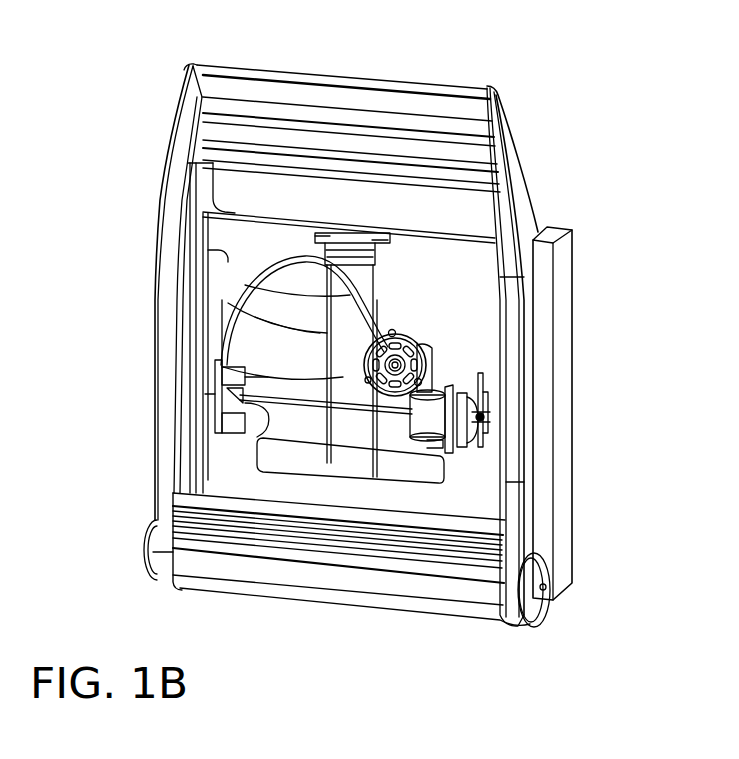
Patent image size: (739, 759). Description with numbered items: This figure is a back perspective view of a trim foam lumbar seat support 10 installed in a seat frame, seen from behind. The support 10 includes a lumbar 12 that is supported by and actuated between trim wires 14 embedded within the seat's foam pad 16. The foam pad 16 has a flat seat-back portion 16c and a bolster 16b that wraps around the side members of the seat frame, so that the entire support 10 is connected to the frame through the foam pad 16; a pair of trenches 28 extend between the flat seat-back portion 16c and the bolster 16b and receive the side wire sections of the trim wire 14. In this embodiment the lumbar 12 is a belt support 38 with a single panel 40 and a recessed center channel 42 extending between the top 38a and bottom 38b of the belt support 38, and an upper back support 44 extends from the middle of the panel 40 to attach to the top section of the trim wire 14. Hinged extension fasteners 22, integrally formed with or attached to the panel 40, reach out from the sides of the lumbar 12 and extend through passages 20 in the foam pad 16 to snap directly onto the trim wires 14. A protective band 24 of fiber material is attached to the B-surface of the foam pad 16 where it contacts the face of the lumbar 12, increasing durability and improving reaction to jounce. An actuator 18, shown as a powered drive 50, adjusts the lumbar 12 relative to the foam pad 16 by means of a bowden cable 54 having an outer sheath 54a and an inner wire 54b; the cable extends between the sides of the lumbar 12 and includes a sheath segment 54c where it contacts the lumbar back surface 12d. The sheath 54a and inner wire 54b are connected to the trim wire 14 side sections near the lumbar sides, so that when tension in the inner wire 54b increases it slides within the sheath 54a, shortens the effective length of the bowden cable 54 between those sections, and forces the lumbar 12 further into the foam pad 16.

The trim foam lumbar seat support 10 is at (514, 60).
The lumbar 12 is at (258, 452).
The lumbar back surface 12d is at (320, 368).
The trim wires 14 is at (203, 228).
The foam pad 16 is at (573, 247).
The bolster 16b is at (548, 228).
The flat seat-back portion 16c is at (430, 230).
The actuator 18 is at (430, 326).
The passages 20 is at (217, 367).
The hinged extension fasteners 22 is at (220, 383).
The protective band 24 is at (483, 443).
The trenches 28 is at (233, 263).
The belt support 38 is at (390, 430).
The top of the belt support 38a is at (330, 297).
The bottom of the belt support 38b is at (318, 455).
The panel 40 is at (343, 465).
The recessed center channel 42 is at (373, 482).
The upper back support 44 is at (232, 275).
The powered drive 50 is at (433, 368).
The bowden cable 54 is at (280, 258).
The outer sheath 54a is at (350, 240).
The inner wire 54b is at (213, 404).
The sheath segment 54c is at (293, 403).